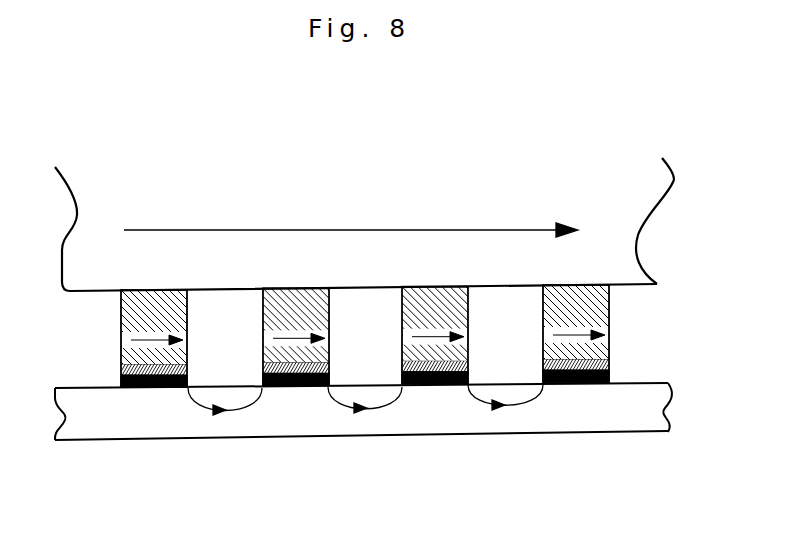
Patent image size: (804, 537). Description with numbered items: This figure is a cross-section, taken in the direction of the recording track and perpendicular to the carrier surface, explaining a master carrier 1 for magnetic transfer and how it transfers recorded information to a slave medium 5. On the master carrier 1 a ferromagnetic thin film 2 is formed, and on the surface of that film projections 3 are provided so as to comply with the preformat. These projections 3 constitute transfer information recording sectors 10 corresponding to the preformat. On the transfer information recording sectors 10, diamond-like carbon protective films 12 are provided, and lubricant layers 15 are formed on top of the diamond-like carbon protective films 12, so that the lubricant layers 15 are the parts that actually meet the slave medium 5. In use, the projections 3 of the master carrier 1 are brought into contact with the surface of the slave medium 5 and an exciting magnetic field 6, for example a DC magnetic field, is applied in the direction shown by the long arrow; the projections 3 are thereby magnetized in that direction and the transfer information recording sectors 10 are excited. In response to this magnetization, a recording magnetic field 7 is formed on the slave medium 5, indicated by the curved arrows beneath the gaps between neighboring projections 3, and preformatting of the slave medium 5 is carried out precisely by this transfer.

The master carrier for magnetic transfer 1 is at (123, 165).
The ferromagnetic thin film 2 is at (620, 272).
The projections 3 is at (593, 310).
The slave medium 5 is at (655, 418).
The exciting magnetic field 6 is at (345, 230).
The recording magnetic field 7 is at (242, 413).
The transfer information recording sectors 10 is at (120, 327).
The diamond-like carbon protective films 12 is at (120, 370).
The lubricant layers 15 is at (120, 385).